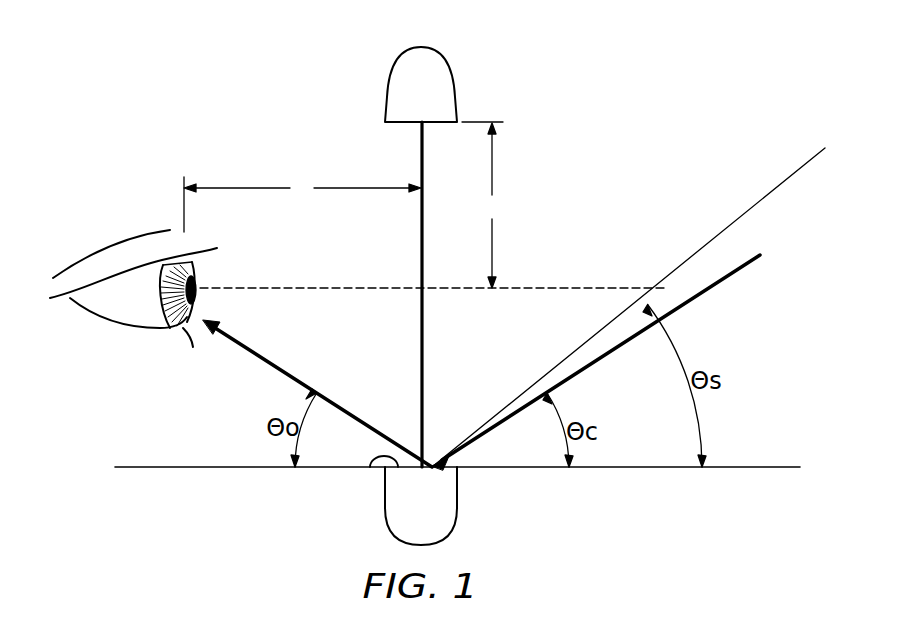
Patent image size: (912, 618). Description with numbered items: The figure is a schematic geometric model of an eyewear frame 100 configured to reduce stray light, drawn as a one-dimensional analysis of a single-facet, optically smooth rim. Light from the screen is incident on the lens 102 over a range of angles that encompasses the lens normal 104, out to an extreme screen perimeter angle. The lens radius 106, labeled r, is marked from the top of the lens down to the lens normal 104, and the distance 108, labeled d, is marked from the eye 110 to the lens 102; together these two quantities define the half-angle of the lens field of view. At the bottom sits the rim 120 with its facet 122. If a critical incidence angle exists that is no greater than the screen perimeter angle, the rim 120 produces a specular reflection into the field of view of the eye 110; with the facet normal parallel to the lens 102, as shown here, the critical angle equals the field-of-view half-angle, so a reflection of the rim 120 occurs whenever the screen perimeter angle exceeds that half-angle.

The frame 100 is at (607, 68).
The lens 102 is at (420, 156).
The lens normal 104 is at (567, 288).
The lens radius 106 is at (494, 165).
The distance 108 is at (245, 183).
The eye 110 is at (105, 247).
The rim 120 is at (445, 512).
The facet 122 is at (368, 470).